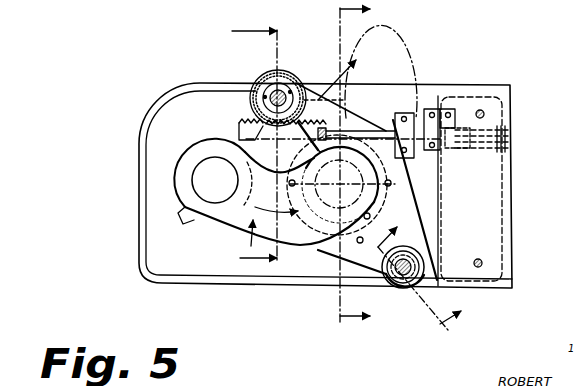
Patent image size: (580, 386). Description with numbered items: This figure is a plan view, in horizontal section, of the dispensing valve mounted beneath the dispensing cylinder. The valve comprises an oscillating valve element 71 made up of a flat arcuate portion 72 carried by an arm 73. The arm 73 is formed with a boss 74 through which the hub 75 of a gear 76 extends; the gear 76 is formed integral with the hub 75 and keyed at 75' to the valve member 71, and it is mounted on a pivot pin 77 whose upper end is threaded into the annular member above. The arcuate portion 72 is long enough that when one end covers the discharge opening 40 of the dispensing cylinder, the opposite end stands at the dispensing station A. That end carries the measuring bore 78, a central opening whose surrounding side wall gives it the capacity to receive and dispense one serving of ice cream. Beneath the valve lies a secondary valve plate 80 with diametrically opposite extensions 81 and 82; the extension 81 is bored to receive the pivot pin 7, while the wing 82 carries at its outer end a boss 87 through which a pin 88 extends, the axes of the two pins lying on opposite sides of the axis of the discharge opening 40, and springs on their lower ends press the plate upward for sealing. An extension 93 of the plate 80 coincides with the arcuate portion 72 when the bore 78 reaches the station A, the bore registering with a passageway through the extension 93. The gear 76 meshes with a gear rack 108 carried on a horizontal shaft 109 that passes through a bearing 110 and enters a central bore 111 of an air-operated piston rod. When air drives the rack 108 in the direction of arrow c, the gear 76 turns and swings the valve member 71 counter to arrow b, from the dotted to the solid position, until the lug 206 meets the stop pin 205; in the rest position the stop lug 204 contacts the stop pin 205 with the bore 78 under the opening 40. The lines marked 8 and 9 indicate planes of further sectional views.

The stop lug 204 is at (190, 210).
The dispensing station A is at (140, 210).
The measuring bore 78 is at (204, 170).
The extension 93 is at (214, 230).
The discharge opening 40 is at (351, 192).
The hub 75 is at (280, 73).
The key 75' is at (224, 83).
The boss 74 is at (265, 97).
The gear 76 is at (252, 92).
The pivot pin 77 is at (300, 83).
The arm 73 is at (246, 143).
The gear rack 108 is at (370, 128).
The shaft 109 is at (425, 125).
The bearing 110 is at (418, 110).
The central bore 111 is at (460, 93).
The lug 206 is at (290, 250).
The extension 81 is at (343, 84).
The boss 87 is at (418, 282).
The pin 88 is at (404, 270).
The stop pin 205 is at (372, 251).
The secondary valve plate 80 is at (408, 203).
The extension 82 is at (413, 234).
The oscillating valve element 71 is at (250, 238).
The arcuate portion 72 is at (290, 236).
The pivot pin 7 is at (240, 144).
The section line 8 is at (366, 166).
The section line 9 is at (427, 268).
The arrow b is at (334, 135).
The arrow c is at (302, 121).